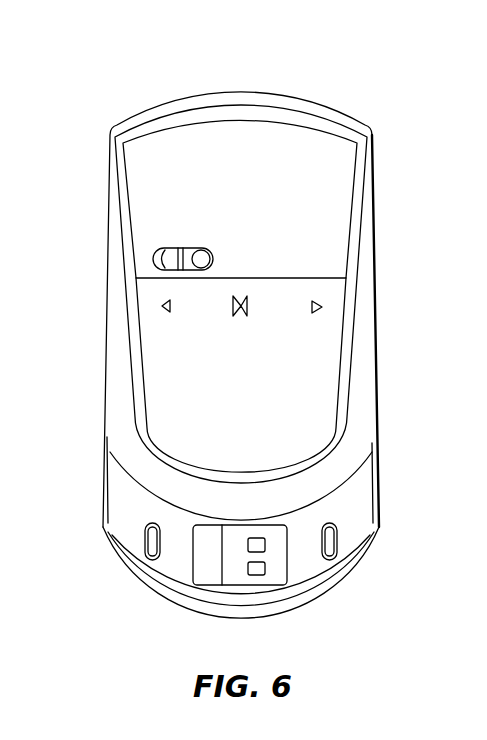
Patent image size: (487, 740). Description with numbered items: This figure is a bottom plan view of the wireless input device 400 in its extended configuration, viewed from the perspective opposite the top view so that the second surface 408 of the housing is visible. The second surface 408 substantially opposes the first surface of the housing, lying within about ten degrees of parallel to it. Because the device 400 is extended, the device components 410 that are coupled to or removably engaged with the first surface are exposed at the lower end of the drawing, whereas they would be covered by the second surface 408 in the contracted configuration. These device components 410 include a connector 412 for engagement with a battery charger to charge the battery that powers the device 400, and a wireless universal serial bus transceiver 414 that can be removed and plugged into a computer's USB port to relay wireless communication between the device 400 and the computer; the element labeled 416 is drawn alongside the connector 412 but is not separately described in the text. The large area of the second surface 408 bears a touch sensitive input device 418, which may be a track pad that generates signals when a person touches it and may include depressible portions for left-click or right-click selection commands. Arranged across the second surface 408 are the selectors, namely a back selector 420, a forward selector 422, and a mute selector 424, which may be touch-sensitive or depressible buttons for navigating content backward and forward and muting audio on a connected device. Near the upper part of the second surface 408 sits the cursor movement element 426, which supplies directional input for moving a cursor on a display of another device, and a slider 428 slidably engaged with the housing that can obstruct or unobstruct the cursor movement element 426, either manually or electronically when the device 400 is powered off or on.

The wireless input device 400 is at (229, 70).
The second surface 408 is at (293, 147).
The device components 410 is at (152, 562).
The connector 412 is at (148, 542).
The wireless universal serial bus (USB) transceiver 414 is at (237, 565).
The right indicator 416 is at (337, 543).
The touch sensitive input device 418 is at (297, 385).
The back selector 420 is at (162, 307).
The forward selector 422 is at (322, 308).
The mute selector 424 is at (236, 314).
The cursor movement element 426 is at (153, 258).
The slider 428 is at (193, 248).